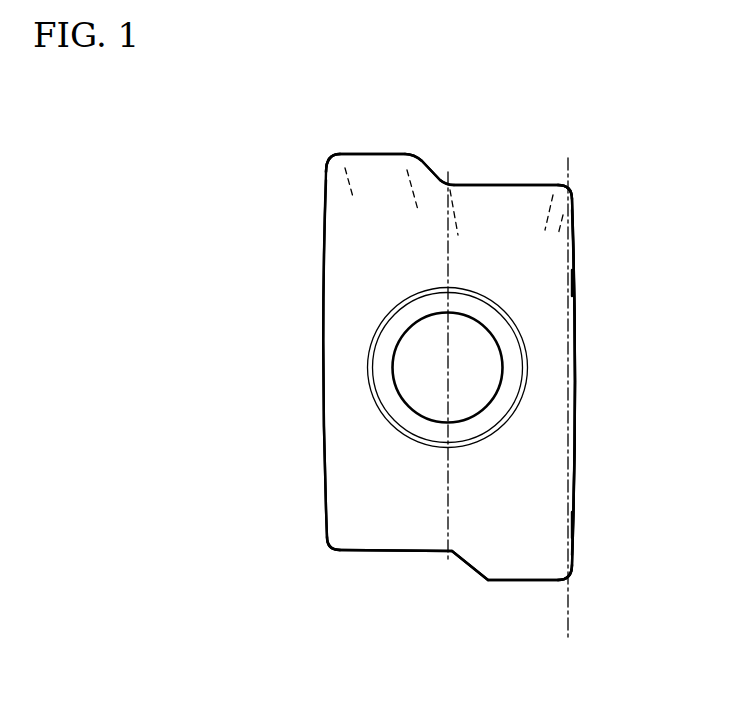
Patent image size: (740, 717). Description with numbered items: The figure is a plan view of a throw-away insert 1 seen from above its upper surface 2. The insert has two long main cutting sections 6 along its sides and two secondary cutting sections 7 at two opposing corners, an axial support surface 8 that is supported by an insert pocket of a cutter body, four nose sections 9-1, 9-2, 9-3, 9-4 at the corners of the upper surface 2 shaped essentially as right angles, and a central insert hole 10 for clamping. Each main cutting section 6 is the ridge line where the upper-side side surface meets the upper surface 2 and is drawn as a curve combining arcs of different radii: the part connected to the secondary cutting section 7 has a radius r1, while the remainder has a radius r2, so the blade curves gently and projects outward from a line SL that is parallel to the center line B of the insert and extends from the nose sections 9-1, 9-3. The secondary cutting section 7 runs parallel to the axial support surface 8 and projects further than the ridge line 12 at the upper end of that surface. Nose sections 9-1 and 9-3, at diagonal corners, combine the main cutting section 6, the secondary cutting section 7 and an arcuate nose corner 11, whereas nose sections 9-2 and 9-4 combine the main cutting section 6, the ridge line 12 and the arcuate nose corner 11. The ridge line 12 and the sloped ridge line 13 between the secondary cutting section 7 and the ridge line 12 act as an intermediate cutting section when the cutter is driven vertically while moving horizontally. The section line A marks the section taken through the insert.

The throw-away insert 1 is at (591, 158).
The upper surface 2 is at (547, 328).
The main cutting section 6 is at (323, 408).
The secondary cutting section 7 is at (373, 153).
The axial support surface 8 is at (502, 208).
The nose section 9-1 is at (318, 171).
The nose section 9-2 is at (589, 196).
The nose section 9-3 is at (581, 586).
The nose section 9-4 is at (338, 564).
The insert hole 10 is at (405, 348).
The arcuate nose corner 11 is at (333, 157).
The ridge line 12 is at (533, 183).
The sloped ridge line 13 is at (435, 175).
The radius r1 is at (558, 529).
The radius r2 is at (558, 288).
The section line A- A is at (219, 372).
The center line B is at (447, 478).
The line SL is at (565, 618).